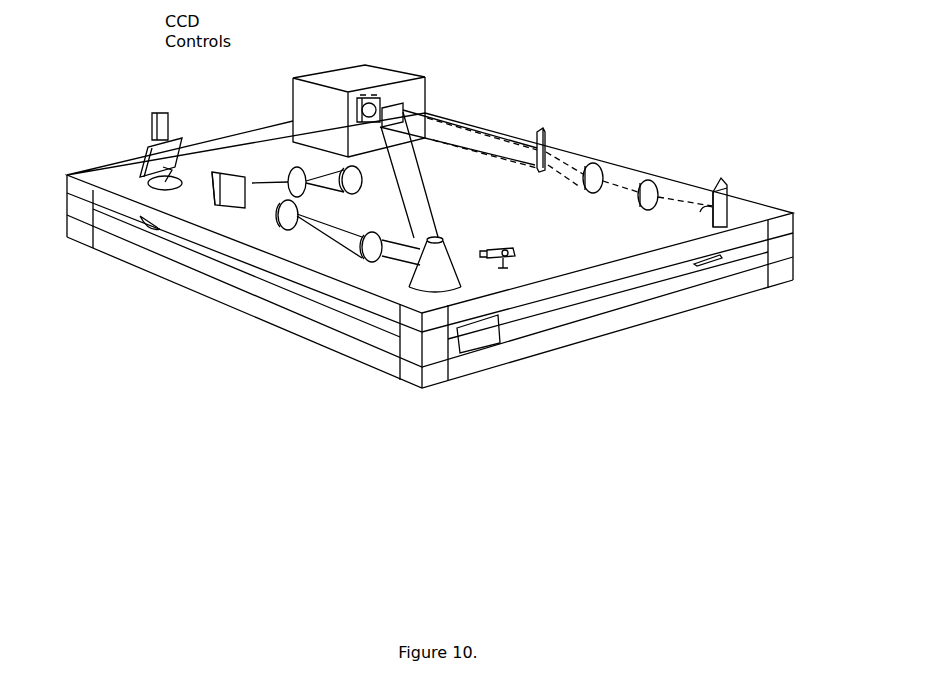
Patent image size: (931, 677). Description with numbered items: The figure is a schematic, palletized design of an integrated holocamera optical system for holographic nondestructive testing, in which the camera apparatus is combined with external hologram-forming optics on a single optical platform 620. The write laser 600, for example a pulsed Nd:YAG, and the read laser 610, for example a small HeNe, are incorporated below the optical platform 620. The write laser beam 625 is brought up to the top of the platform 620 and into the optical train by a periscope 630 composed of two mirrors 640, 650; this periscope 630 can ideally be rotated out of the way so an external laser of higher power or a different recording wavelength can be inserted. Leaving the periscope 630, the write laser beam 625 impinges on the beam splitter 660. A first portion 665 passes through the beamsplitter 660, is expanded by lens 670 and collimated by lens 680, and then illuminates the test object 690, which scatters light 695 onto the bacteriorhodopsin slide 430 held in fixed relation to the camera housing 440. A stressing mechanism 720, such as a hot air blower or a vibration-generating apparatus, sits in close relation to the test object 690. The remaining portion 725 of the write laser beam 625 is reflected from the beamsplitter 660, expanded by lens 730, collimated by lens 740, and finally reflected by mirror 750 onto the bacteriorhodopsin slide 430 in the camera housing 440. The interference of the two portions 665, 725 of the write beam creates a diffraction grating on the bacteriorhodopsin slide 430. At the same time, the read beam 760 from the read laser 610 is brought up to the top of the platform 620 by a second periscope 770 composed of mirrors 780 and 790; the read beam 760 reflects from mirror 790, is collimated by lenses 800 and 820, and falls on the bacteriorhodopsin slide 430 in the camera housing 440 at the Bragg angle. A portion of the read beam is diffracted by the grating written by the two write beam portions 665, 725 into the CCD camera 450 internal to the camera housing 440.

The bacteriorhodopsin slide 430 is at (395, 108).
The camera housing 440 is at (385, 73).
The CCD camera 450 is at (357, 108).
The write laser 600 is at (470, 342).
The read laser 610 is at (652, 280).
The optical platform 620 is at (670, 313).
The write laser beam 625 is at (183, 180).
The periscope 630 is at (150, 117).
The mirror 640 is at (143, 223).
The mirror 650 is at (140, 152).
The beam splitter 660 is at (213, 210).
The portion of the write laser beam 665 is at (232, 192).
The lens 670 is at (290, 220).
The lens 680 is at (363, 255).
The test object 690 is at (432, 280).
The scattered light 695 is at (437, 220).
The stressing mechanism 720 is at (517, 250).
The remaining portion of the write laser beam 725 is at (268, 183).
The lens 730 is at (290, 167).
The lens 740 is at (353, 193).
The mirror 750 is at (545, 130).
The read beam 760 is at (692, 207).
The periscope 770 is at (728, 195).
The mirror 780 is at (710, 265).
The mirror 790 is at (707, 200).
The lens 800 is at (638, 212).
The lens 820 is at (580, 187).